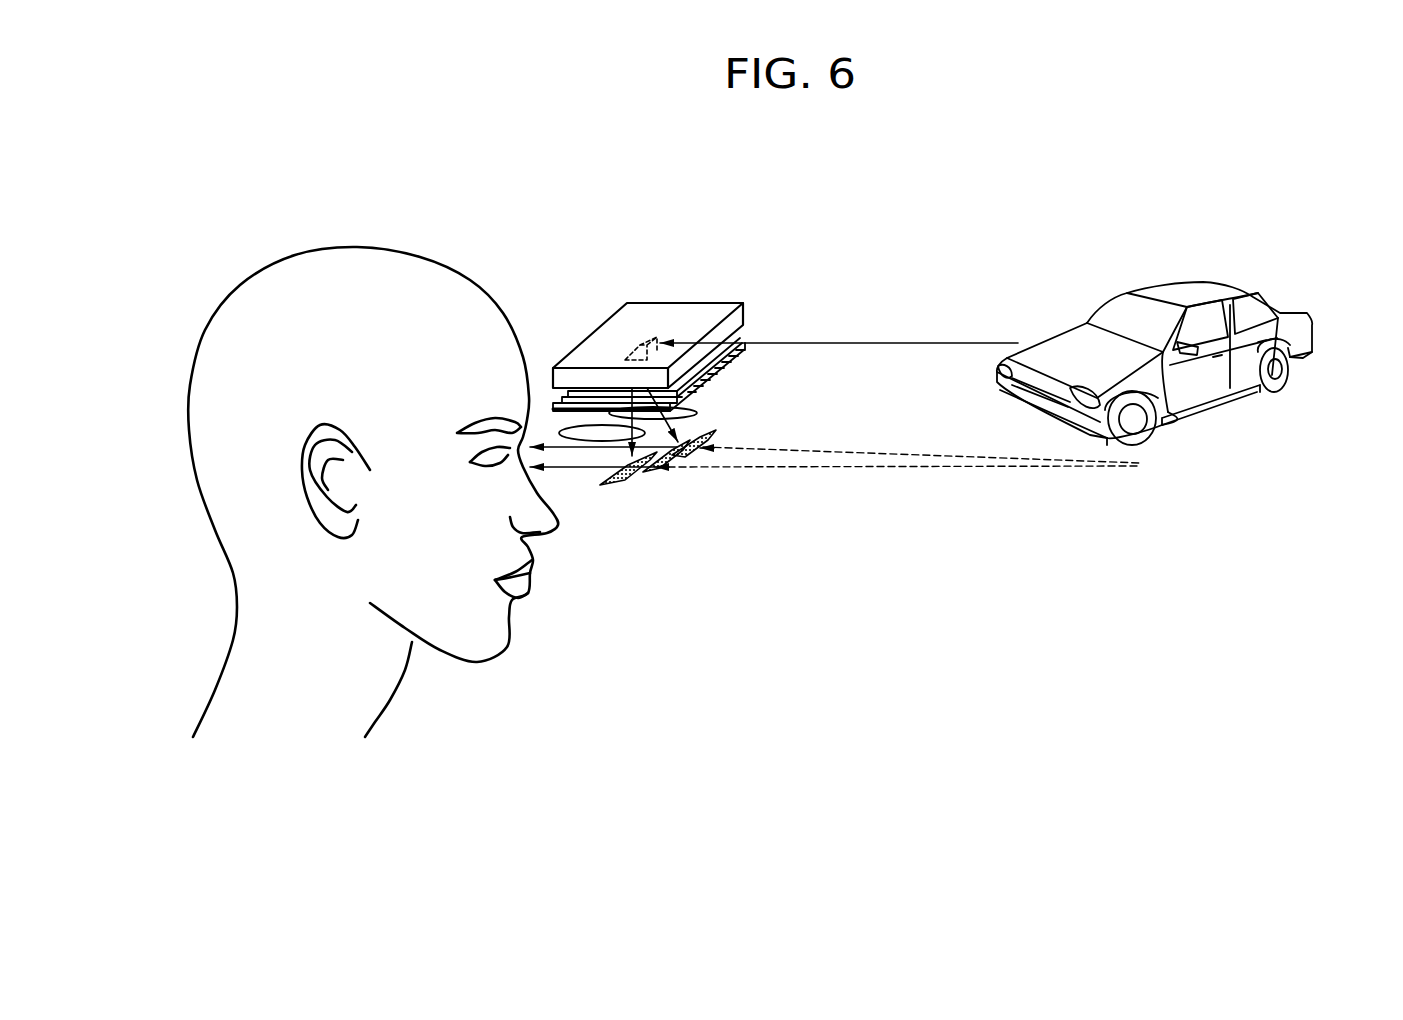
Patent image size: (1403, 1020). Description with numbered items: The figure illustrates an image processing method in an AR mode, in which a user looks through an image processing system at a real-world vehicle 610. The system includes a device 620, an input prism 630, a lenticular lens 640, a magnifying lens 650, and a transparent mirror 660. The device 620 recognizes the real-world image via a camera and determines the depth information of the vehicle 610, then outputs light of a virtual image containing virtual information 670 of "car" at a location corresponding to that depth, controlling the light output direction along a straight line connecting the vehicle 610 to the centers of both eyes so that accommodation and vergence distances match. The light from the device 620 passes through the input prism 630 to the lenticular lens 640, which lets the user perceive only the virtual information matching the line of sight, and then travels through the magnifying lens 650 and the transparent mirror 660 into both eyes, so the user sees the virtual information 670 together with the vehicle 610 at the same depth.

The vehicle 610 is at (1153, 283).
The device 620 is at (685, 302).
The input prism 630 is at (635, 350).
The lenticular lens 640 is at (732, 355).
The magnifying lens 650 is at (698, 413).
The transparent mirror 660 is at (615, 488).
The virtual information 670 is at (1215, 472).